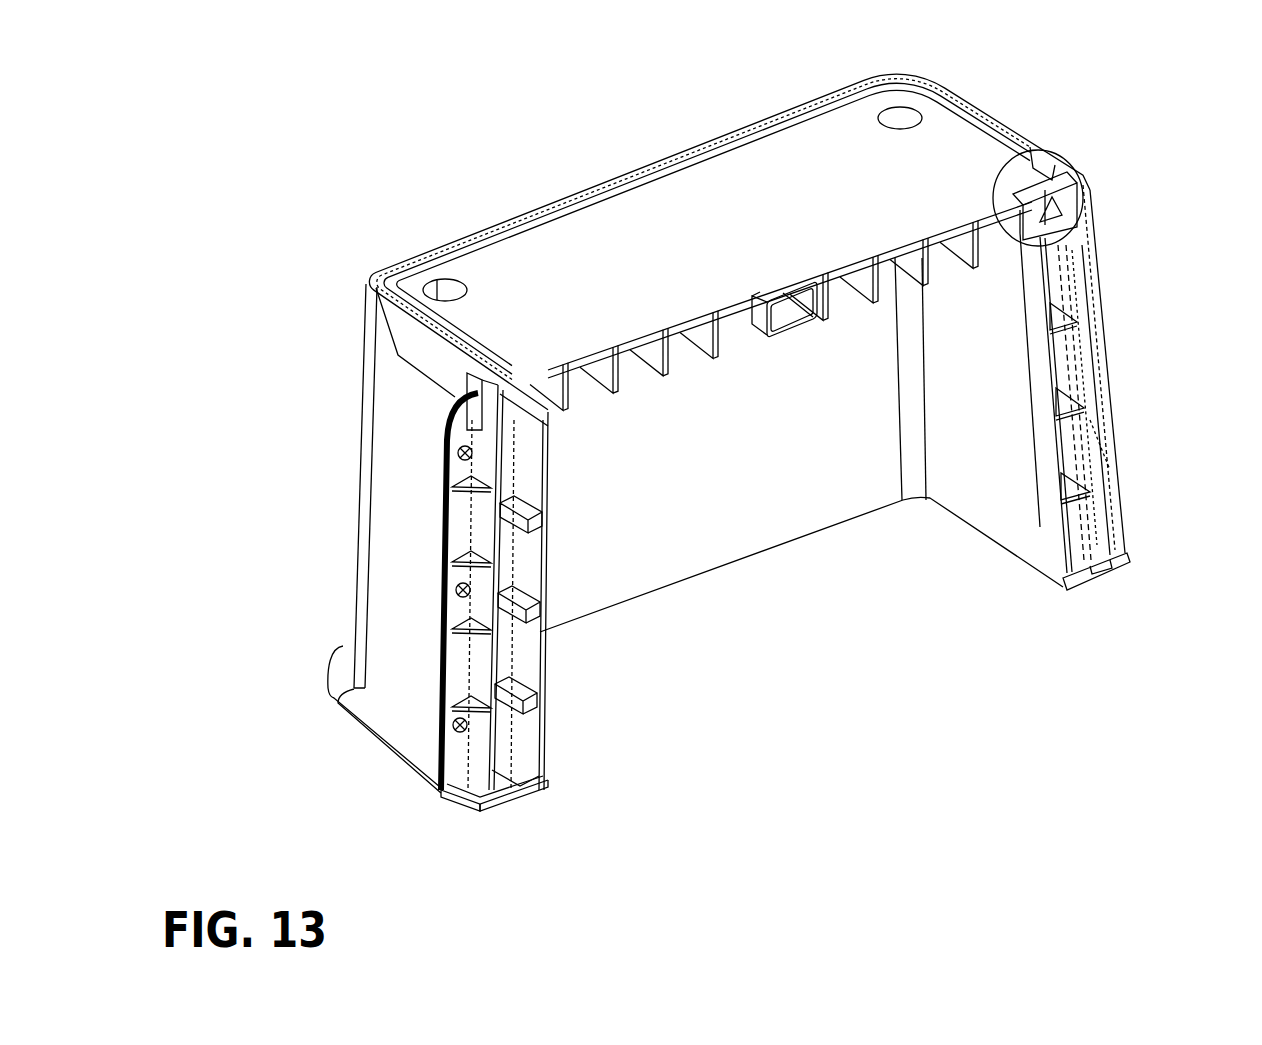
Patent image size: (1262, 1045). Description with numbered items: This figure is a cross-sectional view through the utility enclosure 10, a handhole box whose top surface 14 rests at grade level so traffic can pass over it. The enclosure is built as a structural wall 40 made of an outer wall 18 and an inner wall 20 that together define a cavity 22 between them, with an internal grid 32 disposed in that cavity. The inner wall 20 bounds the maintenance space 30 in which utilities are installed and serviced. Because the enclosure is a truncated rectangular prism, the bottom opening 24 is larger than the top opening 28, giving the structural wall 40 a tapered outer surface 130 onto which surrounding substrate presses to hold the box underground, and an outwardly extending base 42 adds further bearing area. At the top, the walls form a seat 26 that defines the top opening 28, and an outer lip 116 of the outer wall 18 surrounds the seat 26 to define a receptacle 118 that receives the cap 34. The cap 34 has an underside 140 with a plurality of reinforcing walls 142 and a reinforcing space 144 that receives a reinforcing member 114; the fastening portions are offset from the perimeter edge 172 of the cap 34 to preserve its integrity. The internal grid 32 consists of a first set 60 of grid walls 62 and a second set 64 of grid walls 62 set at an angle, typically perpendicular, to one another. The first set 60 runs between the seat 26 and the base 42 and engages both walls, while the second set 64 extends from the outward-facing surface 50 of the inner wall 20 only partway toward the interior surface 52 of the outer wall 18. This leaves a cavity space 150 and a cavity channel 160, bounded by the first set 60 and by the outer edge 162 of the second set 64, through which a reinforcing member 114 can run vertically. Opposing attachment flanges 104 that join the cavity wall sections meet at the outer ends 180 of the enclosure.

The utility enclosure 10 is at (465, 176).
The top surface 14 is at (622, 297).
The outer wall 18 is at (397, 567).
The inner wall 20 is at (613, 535).
The cavity 22 is at (1067, 402).
The bottom opening 24 is at (1060, 580).
The seat 26 is at (1053, 220).
The top opening 28 is at (1005, 170).
The maintenance space 30 is at (673, 543).
The internal grid 32 is at (1067, 310).
The cap 34 is at (566, 242).
The structural wall 40 is at (1120, 510).
The outwardly extending base 42 is at (468, 800).
The outward-facing surface 50 is at (527, 757).
The interior surface 52 is at (506, 798).
The first set of grid walls 60 is at (1063, 520).
The grid walls 62 is at (540, 592).
The second set of grid walls 64 is at (532, 707).
The attachment flanges 104 is at (433, 682).
The reinforcing member 114 is at (1110, 447).
The outer lip 116 is at (363, 280).
The receptacle 118 is at (1000, 112).
The outer surface 130 is at (415, 625).
The underside 140 is at (718, 362).
The reinforcing walls 142 is at (887, 262).
The reinforcing space 144 is at (752, 300).
The cavity space 150 is at (533, 740).
The cavity channel 160 is at (1090, 358).
The outer edge 162 is at (530, 612).
The perimeter edge 172 is at (493, 411).
The outer ends 180 is at (440, 792).